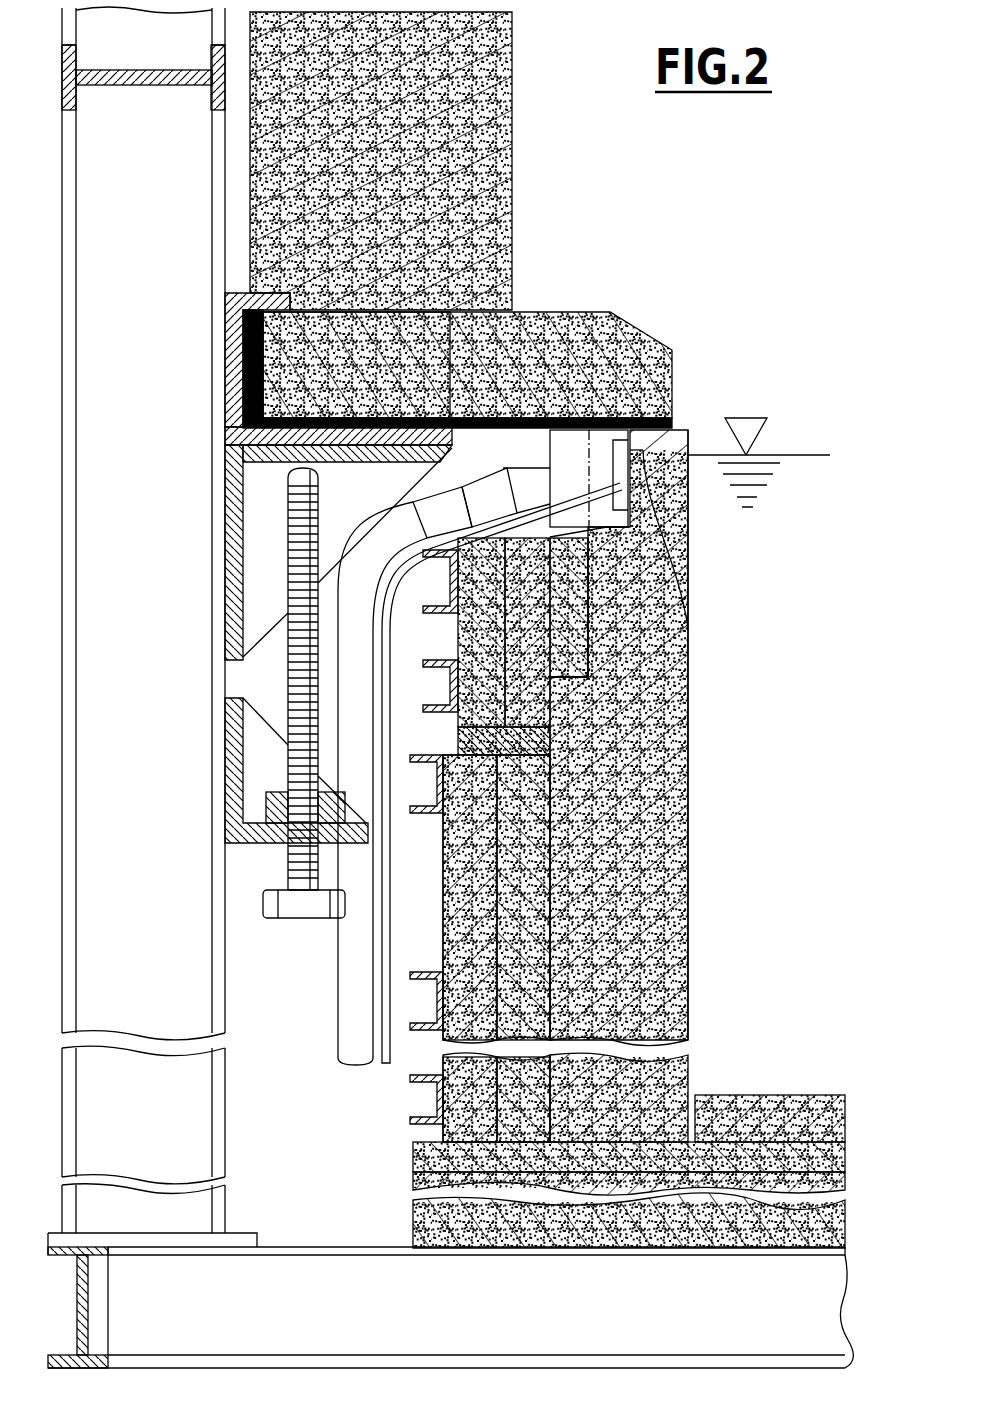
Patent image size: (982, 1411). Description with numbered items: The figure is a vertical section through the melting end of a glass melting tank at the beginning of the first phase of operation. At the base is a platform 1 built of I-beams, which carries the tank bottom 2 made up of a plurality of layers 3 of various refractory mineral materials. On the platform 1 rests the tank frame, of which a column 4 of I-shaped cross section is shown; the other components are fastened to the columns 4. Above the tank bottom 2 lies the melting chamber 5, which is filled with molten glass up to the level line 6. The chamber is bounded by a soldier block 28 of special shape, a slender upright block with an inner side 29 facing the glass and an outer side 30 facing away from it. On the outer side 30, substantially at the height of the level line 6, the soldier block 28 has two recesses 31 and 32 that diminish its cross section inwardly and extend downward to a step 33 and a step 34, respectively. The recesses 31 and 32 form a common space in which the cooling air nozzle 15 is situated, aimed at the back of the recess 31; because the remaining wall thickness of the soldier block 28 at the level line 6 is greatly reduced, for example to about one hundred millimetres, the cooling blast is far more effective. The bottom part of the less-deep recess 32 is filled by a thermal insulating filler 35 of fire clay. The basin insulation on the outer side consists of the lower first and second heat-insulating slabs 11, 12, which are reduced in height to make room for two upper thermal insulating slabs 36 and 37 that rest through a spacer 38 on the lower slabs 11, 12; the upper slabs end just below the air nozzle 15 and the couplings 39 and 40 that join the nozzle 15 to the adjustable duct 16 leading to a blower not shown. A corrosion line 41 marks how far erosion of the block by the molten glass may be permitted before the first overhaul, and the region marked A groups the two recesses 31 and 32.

The platform 1 is at (315, 1273).
The tank bottom 2 is at (756, 1074).
The layers 3 is at (867, 1093).
The columns 4 is at (197, 1108).
The melting chamber 5 is at (798, 652).
The level line 6 is at (805, 456).
The first heat-insulating slabs 11 is at (522, 898).
The second heat-insulating slabs 12 is at (472, 930).
The cooling air nozzle 15 is at (567, 478).
The adjustable duct 16 is at (356, 990).
The soldier block 28 is at (650, 853).
The inner side 29 is at (692, 918).
The outer side 30 is at (550, 1012).
The recess 31 is at (600, 445).
The recess 32 is at (567, 445).
The step 33 is at (688, 560).
The step 34 is at (575, 684).
The thermal insulating filler 35 is at (590, 583).
The upper thermal insulating slab 36 is at (590, 628).
The upper thermal insulating slab 37 is at (456, 690).
The spacer 38 is at (457, 740).
The coupling 39 is at (506, 497).
The coupling 40 is at (442, 512).
The corrosion line 41 is at (690, 541).
The cover assembly A is at (618, 368).